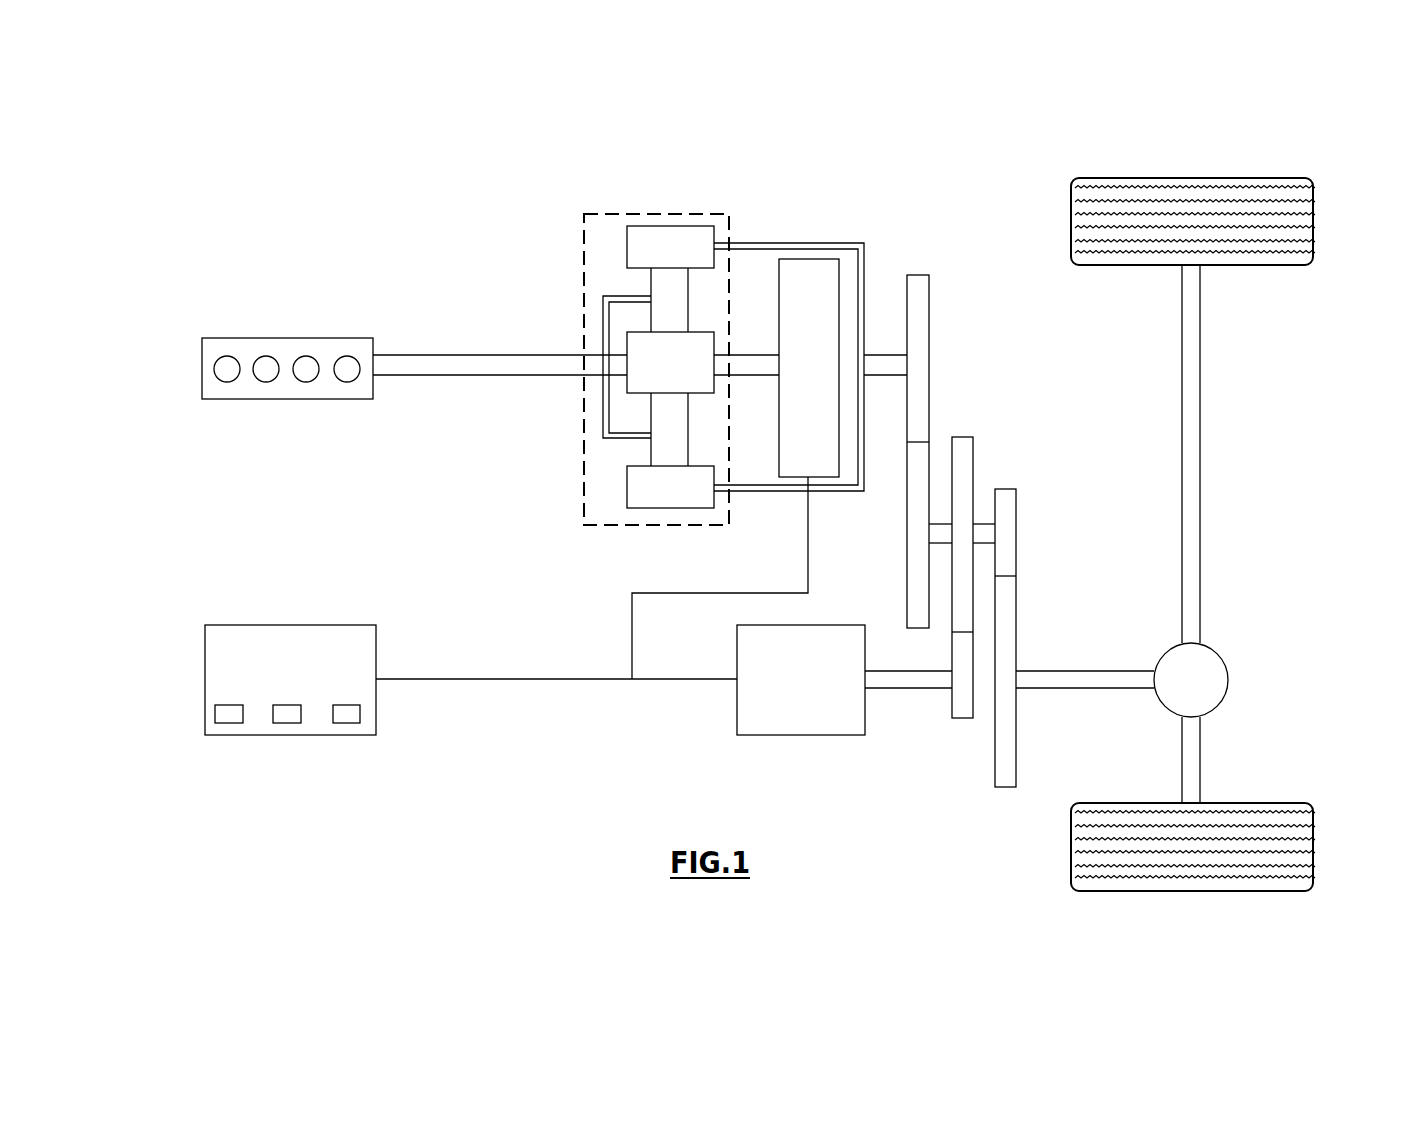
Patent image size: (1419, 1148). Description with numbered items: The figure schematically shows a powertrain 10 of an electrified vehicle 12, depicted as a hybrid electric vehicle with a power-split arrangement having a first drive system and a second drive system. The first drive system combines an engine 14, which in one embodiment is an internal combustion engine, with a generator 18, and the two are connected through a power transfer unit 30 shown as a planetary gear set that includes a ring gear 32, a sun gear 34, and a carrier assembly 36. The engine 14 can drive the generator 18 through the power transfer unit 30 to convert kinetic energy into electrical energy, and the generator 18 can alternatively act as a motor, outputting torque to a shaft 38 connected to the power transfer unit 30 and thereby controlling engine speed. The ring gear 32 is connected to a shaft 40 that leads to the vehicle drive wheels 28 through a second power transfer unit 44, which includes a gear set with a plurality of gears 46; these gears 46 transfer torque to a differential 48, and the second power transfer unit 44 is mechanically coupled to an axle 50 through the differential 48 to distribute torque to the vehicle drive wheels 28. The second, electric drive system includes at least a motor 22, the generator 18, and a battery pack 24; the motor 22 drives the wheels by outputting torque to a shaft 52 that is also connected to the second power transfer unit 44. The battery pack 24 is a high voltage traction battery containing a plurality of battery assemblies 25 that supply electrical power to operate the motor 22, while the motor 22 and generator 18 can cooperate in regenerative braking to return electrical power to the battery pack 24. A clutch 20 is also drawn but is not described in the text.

The powertrain 10 is at (432, 244).
The electrified vehicle 12 is at (832, 170).
The engine 14 is at (222, 338).
The generator 18 is at (789, 259).
The clutch 20 is at (893, 272).
The motor 22 is at (866, 720).
The battery pack 24 is at (222, 625).
The battery assemblies 25 is at (243, 713).
The vehicle drive wheels 28 is at (1313, 848).
The power transfer unit 30 is at (578, 485).
The ring gear 32 is at (627, 244).
The sun gear 34 is at (627, 340).
The carrier assembly 36 is at (602, 425).
The shaft 38 is at (747, 352).
The shaft 40 is at (883, 353).
The second power transfer unit 44 is at (998, 398).
The gears 46 is at (929, 405).
The differential 48 is at (1222, 700).
The axle 50 is at (1200, 443).
The shaft 52 is at (920, 690).